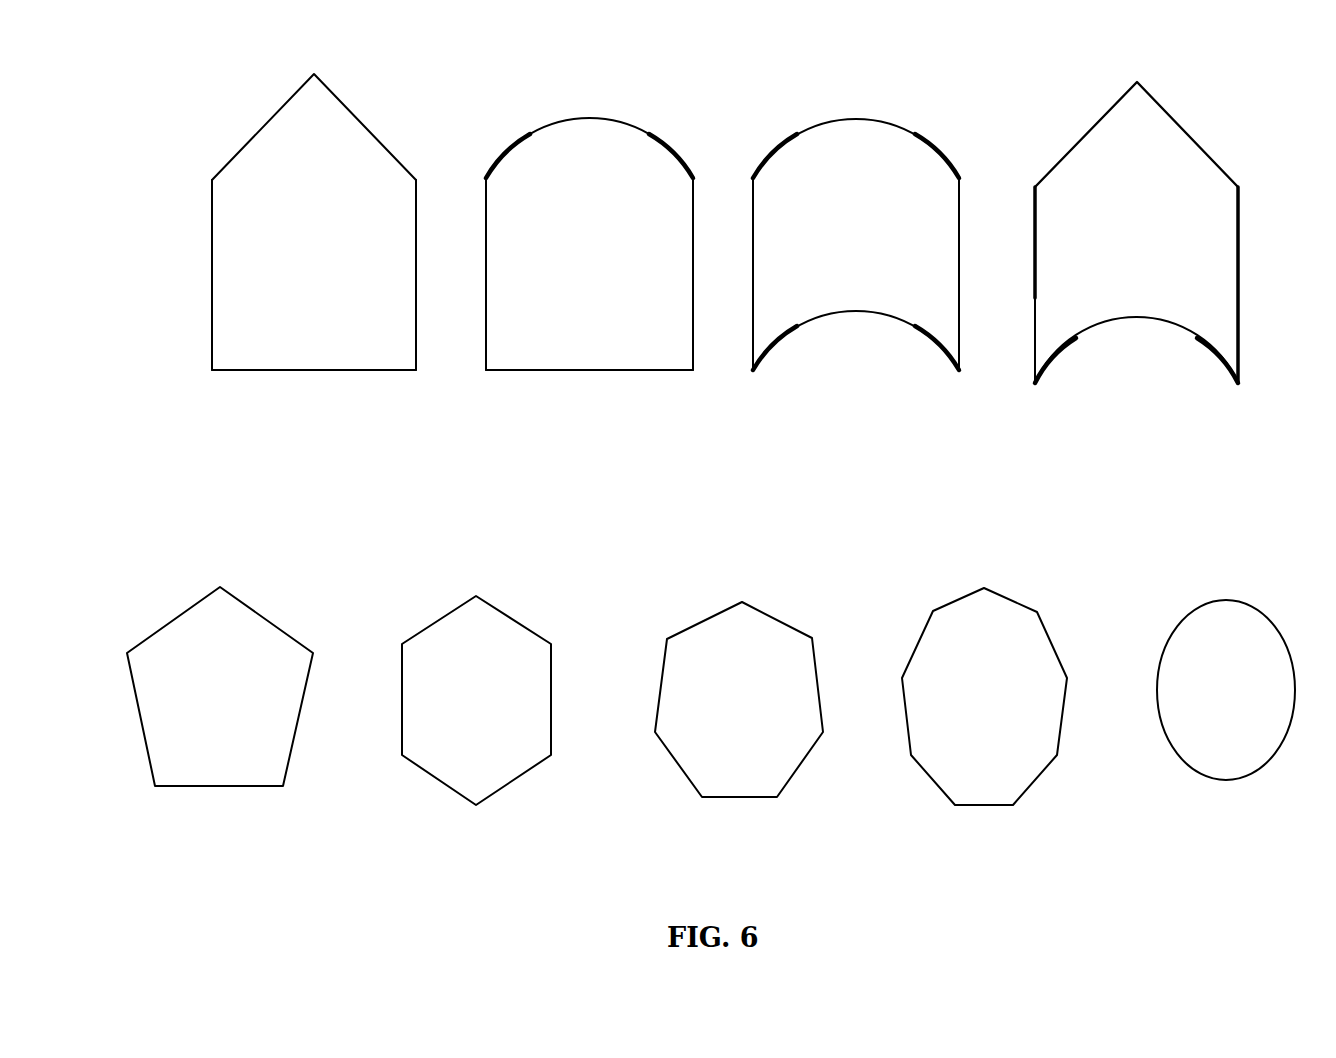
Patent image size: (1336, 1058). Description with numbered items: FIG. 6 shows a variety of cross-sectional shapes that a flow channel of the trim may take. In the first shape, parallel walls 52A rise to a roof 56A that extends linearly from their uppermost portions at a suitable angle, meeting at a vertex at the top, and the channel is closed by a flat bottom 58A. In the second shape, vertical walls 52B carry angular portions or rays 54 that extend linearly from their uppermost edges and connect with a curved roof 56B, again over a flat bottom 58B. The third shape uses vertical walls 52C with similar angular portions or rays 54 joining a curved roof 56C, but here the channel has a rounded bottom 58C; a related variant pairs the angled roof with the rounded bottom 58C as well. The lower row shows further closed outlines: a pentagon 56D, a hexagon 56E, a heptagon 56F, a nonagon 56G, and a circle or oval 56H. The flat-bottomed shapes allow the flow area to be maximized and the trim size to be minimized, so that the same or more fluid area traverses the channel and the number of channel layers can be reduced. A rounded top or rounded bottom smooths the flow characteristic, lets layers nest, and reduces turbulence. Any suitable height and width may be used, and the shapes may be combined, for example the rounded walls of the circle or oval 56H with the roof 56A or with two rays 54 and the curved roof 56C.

The parallel walls 52A is at (212, 292).
The vertical walls 52B is at (486, 287).
The vertical walls 52C is at (753, 293).
The angular portions or rays 54 is at (495, 167).
The roof 56A is at (287, 108).
The curved roof 56B is at (565, 120).
The curved roof 56C is at (820, 123).
The pentagon 56D is at (162, 632).
The hexagon 56E is at (425, 630).
The heptagon 56F is at (695, 628).
The nonagon 56G is at (933, 611).
The circle or oval 56H is at (1177, 630).
The flat bottom 58A is at (303, 370).
The flat bottom 58B is at (620, 370).
The rounded bottom 58C is at (895, 315).